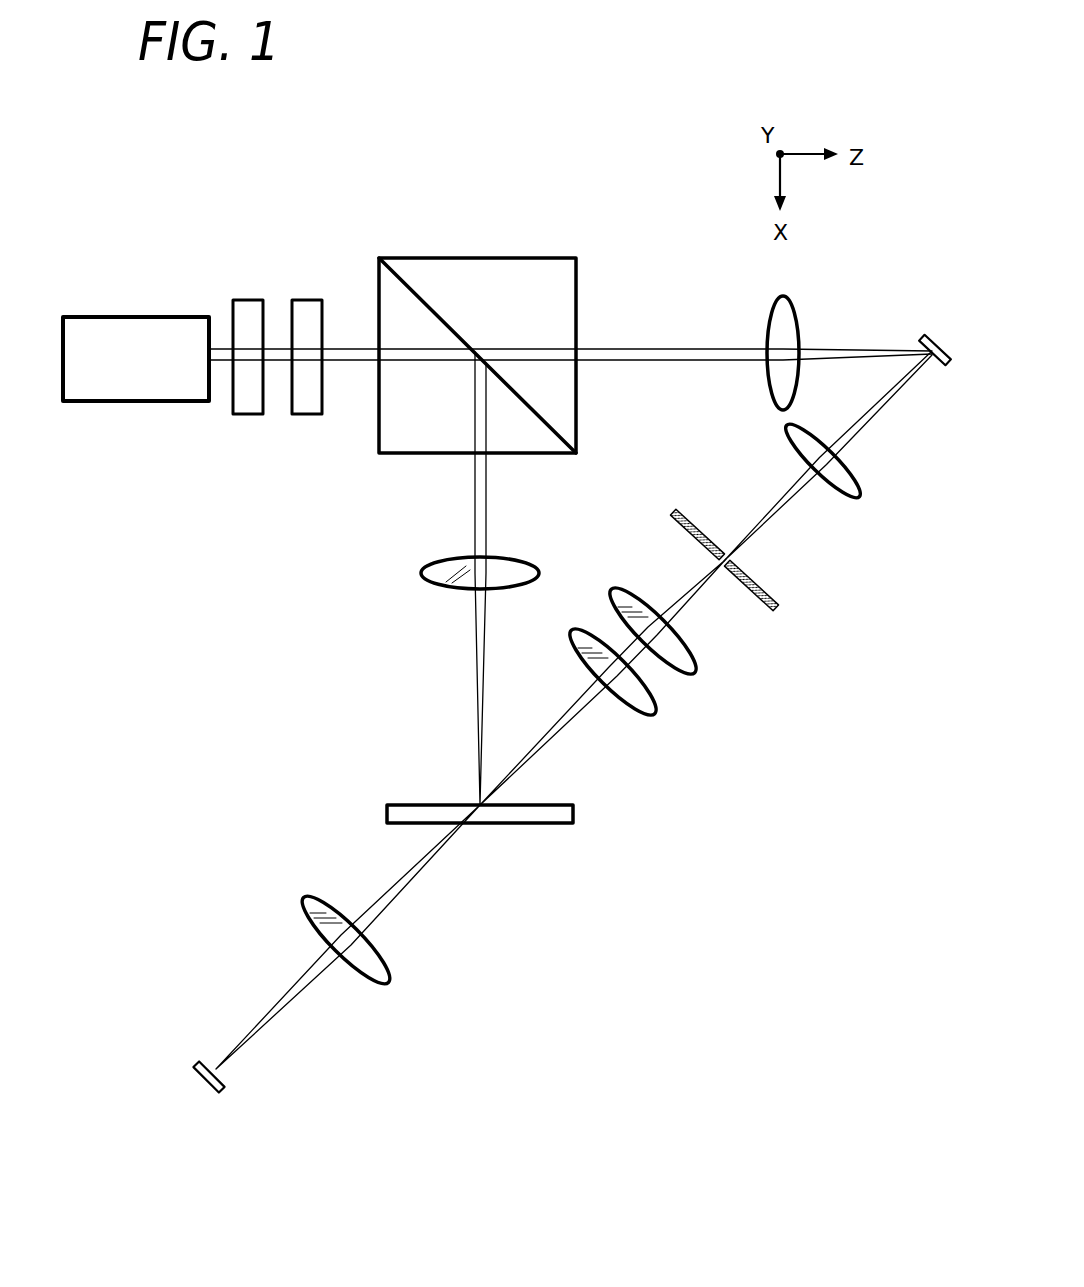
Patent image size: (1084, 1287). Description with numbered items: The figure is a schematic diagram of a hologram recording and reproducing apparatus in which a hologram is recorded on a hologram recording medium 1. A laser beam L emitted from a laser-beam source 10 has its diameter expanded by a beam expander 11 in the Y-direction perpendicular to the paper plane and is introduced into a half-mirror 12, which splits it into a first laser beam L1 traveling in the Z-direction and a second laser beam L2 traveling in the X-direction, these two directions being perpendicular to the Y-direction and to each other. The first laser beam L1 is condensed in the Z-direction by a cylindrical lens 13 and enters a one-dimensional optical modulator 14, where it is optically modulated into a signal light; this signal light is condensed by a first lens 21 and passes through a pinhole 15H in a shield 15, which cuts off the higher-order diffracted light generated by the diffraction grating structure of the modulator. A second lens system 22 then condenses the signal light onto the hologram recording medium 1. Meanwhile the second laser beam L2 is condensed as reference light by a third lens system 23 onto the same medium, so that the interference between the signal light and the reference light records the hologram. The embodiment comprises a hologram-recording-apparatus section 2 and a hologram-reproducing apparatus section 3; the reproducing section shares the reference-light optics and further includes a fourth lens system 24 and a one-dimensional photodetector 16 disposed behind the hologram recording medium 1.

The hologram recording medium 1 is at (553, 825).
The hologram-recording-apparatus section 2 is at (553, 553).
The hologram-reproducing apparatus section 3 is at (260, 769).
The laser-beam source 10 is at (150, 317).
The beam expander 11 is at (327, 284).
The half-mirror 12 is at (512, 258).
The cylindrical lens 13 is at (768, 326).
The one-dimensional optical modulator 14 is at (926, 340).
The shield 15 is at (761, 606).
The pinhole 15H is at (730, 558).
The one-dimensional photodetector 16 is at (212, 1096).
The first lens 21 is at (829, 484).
The second lens system 22 is at (722, 652).
The third lens system 23 is at (425, 573).
The fourth lens system 24 is at (355, 976).
The laser beam L is at (216, 364).
The first laser beam L1 is at (600, 366).
The second laser beam L2 is at (490, 500).